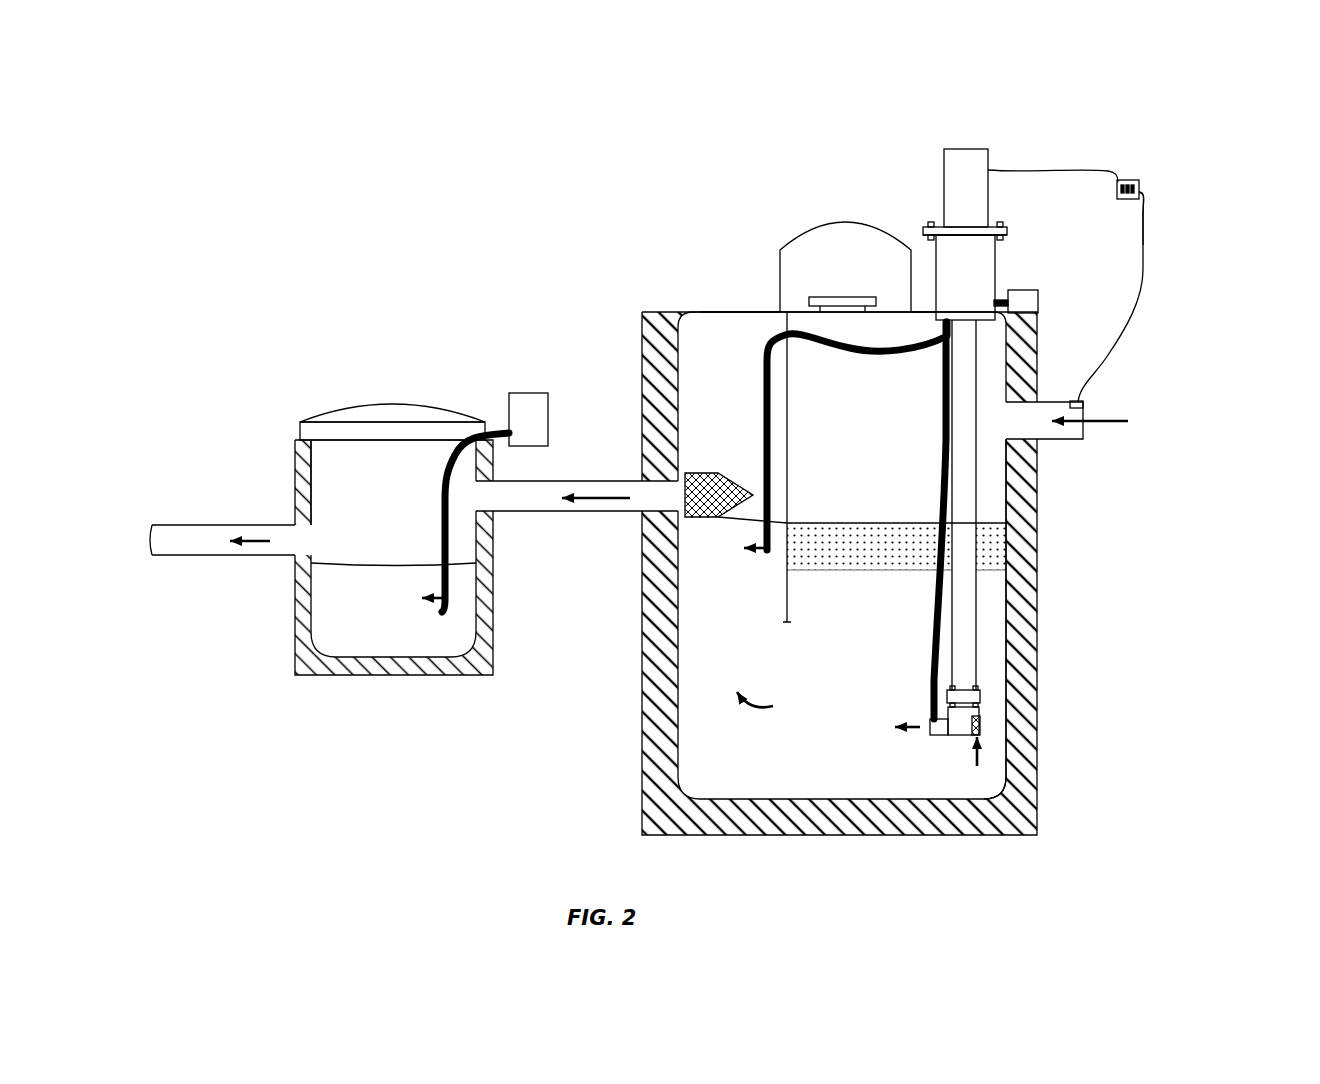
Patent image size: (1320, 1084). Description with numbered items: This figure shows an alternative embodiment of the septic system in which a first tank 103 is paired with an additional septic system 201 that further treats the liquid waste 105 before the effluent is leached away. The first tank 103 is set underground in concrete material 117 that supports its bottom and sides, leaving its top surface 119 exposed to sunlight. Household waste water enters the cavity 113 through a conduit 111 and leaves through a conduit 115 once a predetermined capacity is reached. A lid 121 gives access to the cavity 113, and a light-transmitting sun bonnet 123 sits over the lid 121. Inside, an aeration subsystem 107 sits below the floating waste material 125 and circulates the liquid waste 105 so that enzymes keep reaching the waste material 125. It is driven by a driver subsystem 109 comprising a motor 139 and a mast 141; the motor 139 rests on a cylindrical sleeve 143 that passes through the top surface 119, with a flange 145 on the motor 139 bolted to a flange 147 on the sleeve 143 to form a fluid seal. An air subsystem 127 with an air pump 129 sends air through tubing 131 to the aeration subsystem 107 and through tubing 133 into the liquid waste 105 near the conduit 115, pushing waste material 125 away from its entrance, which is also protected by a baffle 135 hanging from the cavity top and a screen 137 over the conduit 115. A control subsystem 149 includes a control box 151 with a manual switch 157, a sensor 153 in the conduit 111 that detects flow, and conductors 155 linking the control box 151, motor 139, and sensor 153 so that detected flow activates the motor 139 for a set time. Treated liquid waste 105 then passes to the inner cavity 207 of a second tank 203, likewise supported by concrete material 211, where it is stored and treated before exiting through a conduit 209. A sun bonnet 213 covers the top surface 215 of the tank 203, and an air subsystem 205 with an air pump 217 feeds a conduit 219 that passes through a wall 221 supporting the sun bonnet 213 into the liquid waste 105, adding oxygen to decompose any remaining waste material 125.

The tank 103 is at (1007, 720).
The liquid waste 105 is at (862, 523).
The aeration subsystem 107 is at (888, 750).
The driver subsystem 109 is at (973, 428).
The conduit 111 is at (1058, 440).
The cavity 113 is at (688, 360).
The conduit 115 is at (593, 511).
The concrete material 117 is at (642, 768).
The top surface 119 is at (740, 312).
The lid 121 is at (855, 297).
The sun bonnet 123 is at (842, 226).
The waste material 125 is at (872, 553).
The air subsystem 127 is at (1056, 311).
The air pump 129 is at (1040, 302).
The tubing 131 is at (938, 447).
The tubing 133 is at (760, 440).
The baffle 135 is at (790, 406).
The screen 137 is at (714, 520).
The motor 139 is at (940, 150).
The mast 141 is at (976, 592).
The cylindrical sleeve 143 is at (996, 282).
The flange 145 is at (1007, 230).
The flange 147 is at (1008, 236).
The control subsystem 149 is at (1134, 270).
The control box 151 is at (1142, 193).
The sensor 153 is at (1085, 402).
The conductors 155 is at (1048, 170).
The switch 157 is at (1125, 180).
The additional septic system 201 is at (374, 494).
The tank 203 is at (460, 667).
The air subsystem 205 is at (504, 457).
The inner cavity 207 is at (318, 482).
The conduit 209 is at (195, 525).
The concrete material 211 is at (296, 620).
The sun bonnet 213 is at (332, 408).
The top surface 215 is at (422, 440).
The air pump 217 is at (549, 412).
The conduit 219 is at (440, 487).
The wall 221 is at (298, 432).